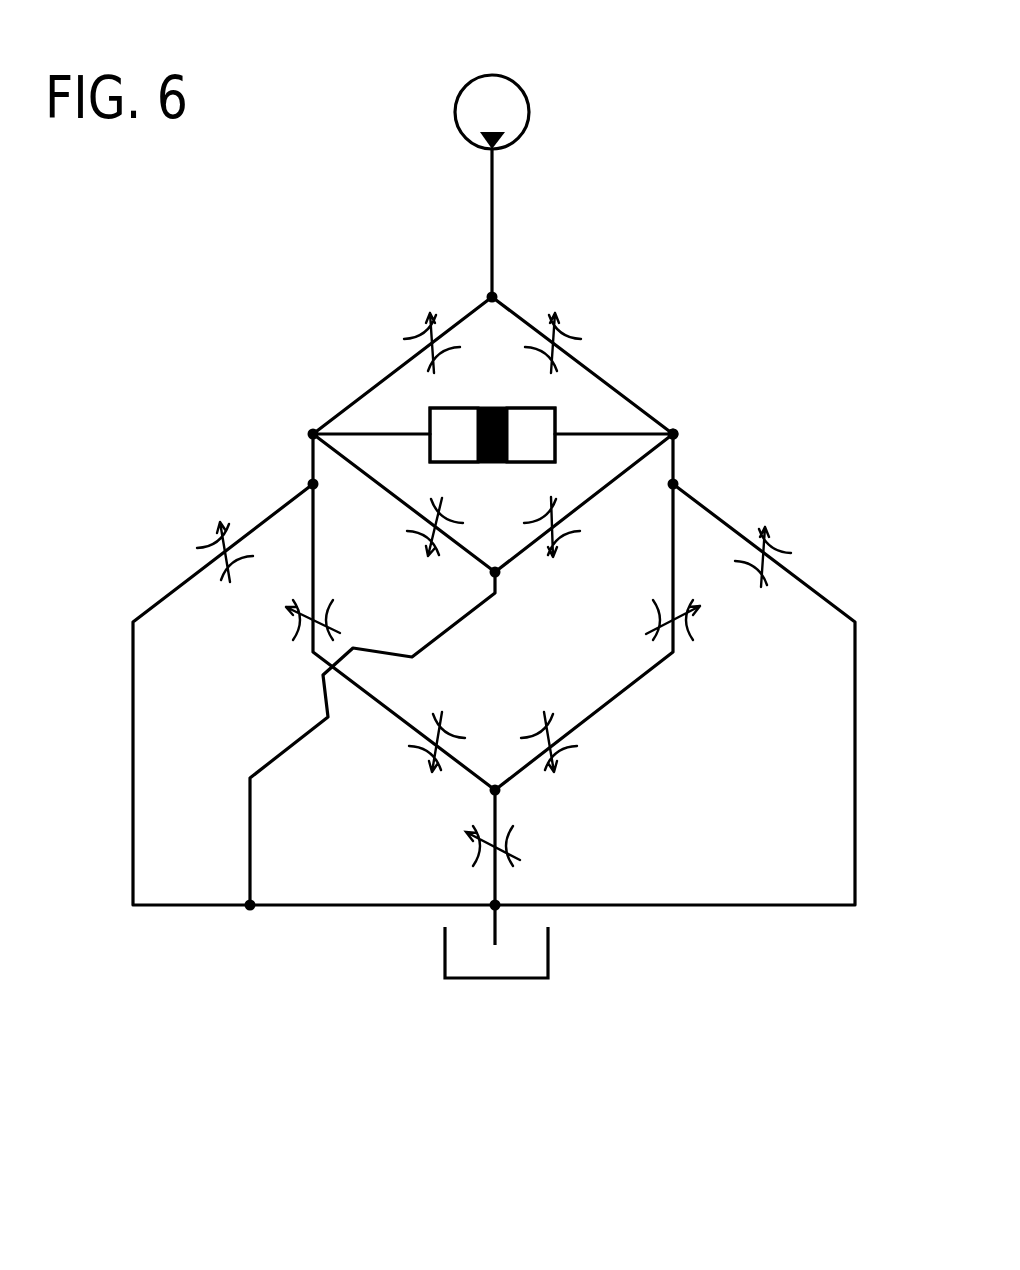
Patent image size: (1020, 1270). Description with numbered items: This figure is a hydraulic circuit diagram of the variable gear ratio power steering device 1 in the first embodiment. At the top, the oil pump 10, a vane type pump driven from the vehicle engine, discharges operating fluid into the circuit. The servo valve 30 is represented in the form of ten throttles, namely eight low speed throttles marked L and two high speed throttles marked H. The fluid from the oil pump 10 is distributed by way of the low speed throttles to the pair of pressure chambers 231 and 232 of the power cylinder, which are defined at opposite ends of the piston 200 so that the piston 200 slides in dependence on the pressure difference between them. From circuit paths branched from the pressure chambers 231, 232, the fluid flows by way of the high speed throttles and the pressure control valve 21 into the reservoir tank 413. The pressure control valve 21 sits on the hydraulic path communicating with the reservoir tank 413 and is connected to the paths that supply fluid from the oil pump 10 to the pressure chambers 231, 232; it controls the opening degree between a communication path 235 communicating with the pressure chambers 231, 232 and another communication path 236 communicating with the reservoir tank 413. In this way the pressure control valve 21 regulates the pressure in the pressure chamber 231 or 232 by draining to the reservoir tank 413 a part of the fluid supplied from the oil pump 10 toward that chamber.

The power steering device 1 is at (762, 140).
The oil pump 10 is at (505, 100).
The piston 200 is at (495, 408).
The pressure chamber 231 is at (450, 430).
The pressure chamber 232 is at (533, 430).
The servo valve 30 is at (705, 443).
The pressure control valve 21 is at (517, 840).
The communication path 235 is at (497, 812).
The communication path 236 is at (492, 883).
The reservoir tank 413 is at (548, 955).